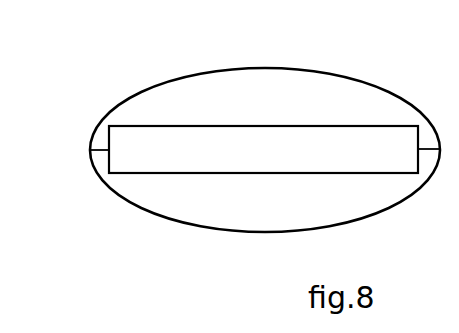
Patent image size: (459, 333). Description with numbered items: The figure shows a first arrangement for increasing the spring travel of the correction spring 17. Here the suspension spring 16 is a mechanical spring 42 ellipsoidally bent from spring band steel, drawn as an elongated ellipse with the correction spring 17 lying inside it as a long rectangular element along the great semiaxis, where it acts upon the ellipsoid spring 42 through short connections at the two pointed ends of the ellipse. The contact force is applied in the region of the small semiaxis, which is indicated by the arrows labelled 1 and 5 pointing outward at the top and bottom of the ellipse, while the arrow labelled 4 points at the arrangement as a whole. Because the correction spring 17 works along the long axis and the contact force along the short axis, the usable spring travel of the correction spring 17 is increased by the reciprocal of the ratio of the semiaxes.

The first direction 1 is at (264, 68).
The assembly 4 is at (86, 182).
The second direction 5 is at (265, 232).
The suspension spring 16 is at (338, 78).
The correction spring 17 is at (336, 159).
The mechanical spring 42 is at (155, 213).